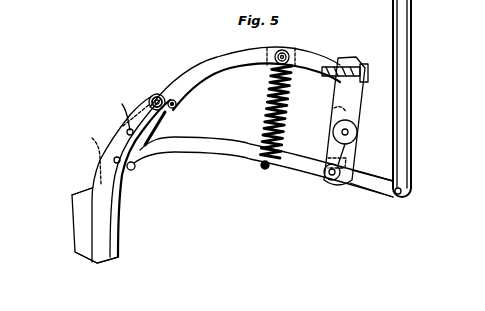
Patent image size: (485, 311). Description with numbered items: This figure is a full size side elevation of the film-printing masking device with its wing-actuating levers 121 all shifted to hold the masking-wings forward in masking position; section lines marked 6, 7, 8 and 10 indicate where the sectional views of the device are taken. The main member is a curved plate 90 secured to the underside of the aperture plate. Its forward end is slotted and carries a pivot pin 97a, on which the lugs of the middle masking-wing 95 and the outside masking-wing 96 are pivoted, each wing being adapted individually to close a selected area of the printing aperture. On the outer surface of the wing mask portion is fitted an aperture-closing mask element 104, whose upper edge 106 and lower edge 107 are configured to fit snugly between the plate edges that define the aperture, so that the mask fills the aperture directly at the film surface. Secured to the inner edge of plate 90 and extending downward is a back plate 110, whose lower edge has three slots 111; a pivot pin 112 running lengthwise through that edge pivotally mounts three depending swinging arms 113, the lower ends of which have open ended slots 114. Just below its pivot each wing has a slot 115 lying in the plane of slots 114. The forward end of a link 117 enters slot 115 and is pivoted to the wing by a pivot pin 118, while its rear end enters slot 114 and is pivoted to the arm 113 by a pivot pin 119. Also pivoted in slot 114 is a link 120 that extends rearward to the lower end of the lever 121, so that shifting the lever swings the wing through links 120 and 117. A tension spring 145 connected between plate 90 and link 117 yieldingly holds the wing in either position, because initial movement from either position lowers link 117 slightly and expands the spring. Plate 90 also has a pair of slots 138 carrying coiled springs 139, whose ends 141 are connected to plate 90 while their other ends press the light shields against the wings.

The plate 90 is at (217, 67).
The middle masking-wing 95 is at (101, 3).
The outside masking-wing 96 is at (100, 172).
The pivot pin 97a is at (113, 111).
The aperture-closing mask element 104 is at (80, 230).
The upper edge of mask element 106 is at (80, 183).
The lower edge of mask element 107 is at (80, 255).
The back plate 110 is at (357, 97).
The slots 111 is at (336, 113).
The pivot pin 112 is at (358, 118).
The swinging arm 113 is at (334, 145).
The open ended slots 114 is at (347, 162).
The slots 115 is at (92, 138).
The link 117 is at (214, 152).
The pivot pin 118 is at (127, 132).
The pivot pin 119 is at (330, 181).
The link 120 is at (378, 188).
The wing-actuating lever 121 is at (401, 68).
The slots 138 is at (150, 97).
The spring 139 is at (157, 93).
The spring end 141 is at (175, 105).
The tension spring 145 is at (266, 113).
The section line 6- 6 is at (155, 50).
The section line 7- 7 is at (342, 40).
The section line 8- 8 is at (100, 32).
The section line 10- 10 is at (170, 237).